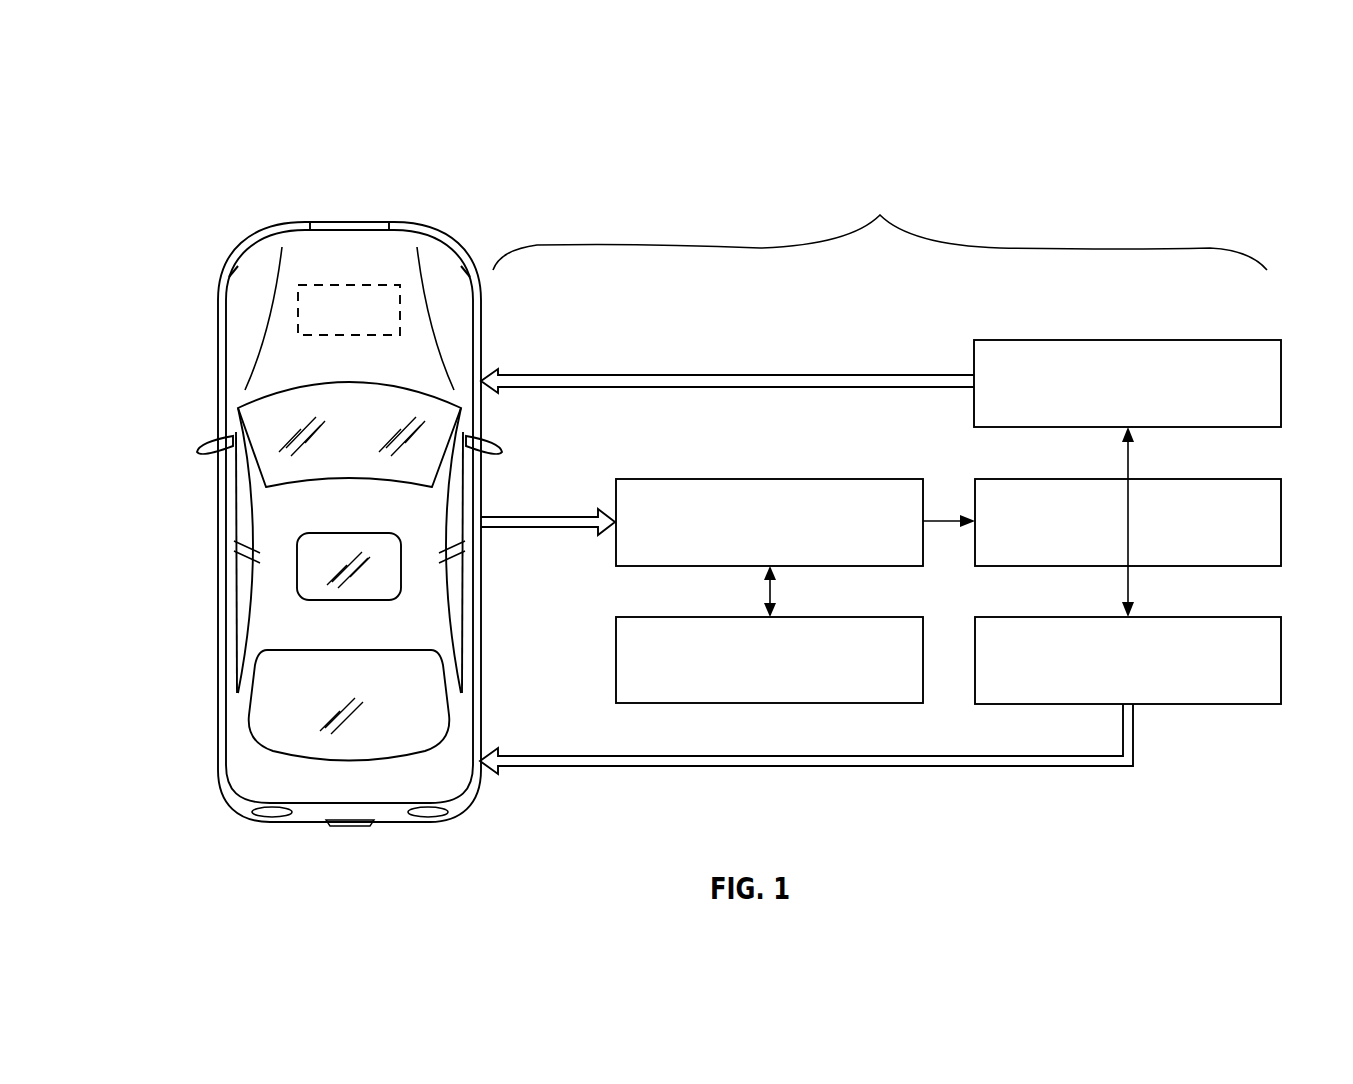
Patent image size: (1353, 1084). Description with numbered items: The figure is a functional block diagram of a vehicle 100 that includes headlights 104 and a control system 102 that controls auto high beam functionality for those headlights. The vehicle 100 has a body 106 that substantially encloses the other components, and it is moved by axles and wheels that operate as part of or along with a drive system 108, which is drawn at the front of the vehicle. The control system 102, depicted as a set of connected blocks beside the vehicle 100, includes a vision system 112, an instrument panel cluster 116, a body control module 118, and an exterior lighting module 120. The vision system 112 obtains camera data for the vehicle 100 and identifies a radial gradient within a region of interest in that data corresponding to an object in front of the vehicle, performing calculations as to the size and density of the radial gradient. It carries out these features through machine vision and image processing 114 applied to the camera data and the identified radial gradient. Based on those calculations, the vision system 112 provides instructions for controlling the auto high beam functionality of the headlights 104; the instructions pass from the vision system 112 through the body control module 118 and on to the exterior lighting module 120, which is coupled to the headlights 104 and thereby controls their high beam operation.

The vehicle 100 is at (198, 126).
The control system 102 is at (881, 479).
The headlights 104 is at (273, 233).
The body 106 is at (228, 338).
The drive system 108 is at (370, 285).
The vision system 112 is at (687, 479).
The machine vision and image processing 114 is at (687, 617).
The instrument panel cluster 116 is at (1210, 340).
The body control module 118 is at (1210, 479).
The exterior lighting module 120 is at (1210, 617).